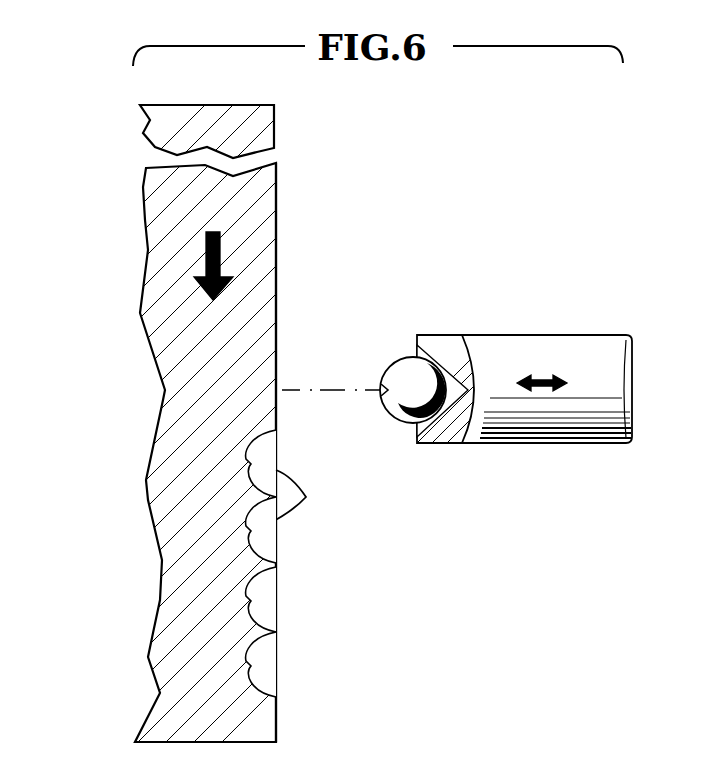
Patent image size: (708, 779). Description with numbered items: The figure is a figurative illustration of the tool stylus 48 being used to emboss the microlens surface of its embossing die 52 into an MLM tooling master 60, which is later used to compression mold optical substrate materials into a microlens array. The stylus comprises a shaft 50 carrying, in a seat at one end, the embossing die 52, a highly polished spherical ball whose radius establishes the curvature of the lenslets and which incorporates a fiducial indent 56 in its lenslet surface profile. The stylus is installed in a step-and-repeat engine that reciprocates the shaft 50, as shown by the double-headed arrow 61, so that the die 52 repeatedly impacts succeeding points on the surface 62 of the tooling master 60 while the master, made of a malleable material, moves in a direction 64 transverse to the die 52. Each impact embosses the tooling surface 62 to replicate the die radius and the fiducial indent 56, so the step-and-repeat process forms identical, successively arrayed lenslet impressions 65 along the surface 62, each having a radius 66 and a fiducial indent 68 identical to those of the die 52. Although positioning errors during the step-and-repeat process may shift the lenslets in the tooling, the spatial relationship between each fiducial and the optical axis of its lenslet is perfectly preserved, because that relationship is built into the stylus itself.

The tool stylus 48 is at (499, 445).
The shaft 50 is at (505, 343).
The embossing die 52 is at (405, 368).
The fiducial indent 56 is at (388, 396).
The MLM tooling master 60 is at (145, 395).
The reciprocation arrow 61 is at (538, 378).
The surface of the tooling master 62 is at (276, 287).
The direction of movement 64 is at (206, 255).
The lenslet impressions 65 is at (268, 656).
The radius of lenslet impression 66 is at (256, 438).
The fiducial indent of lenslet impression 68 is at (307, 497).